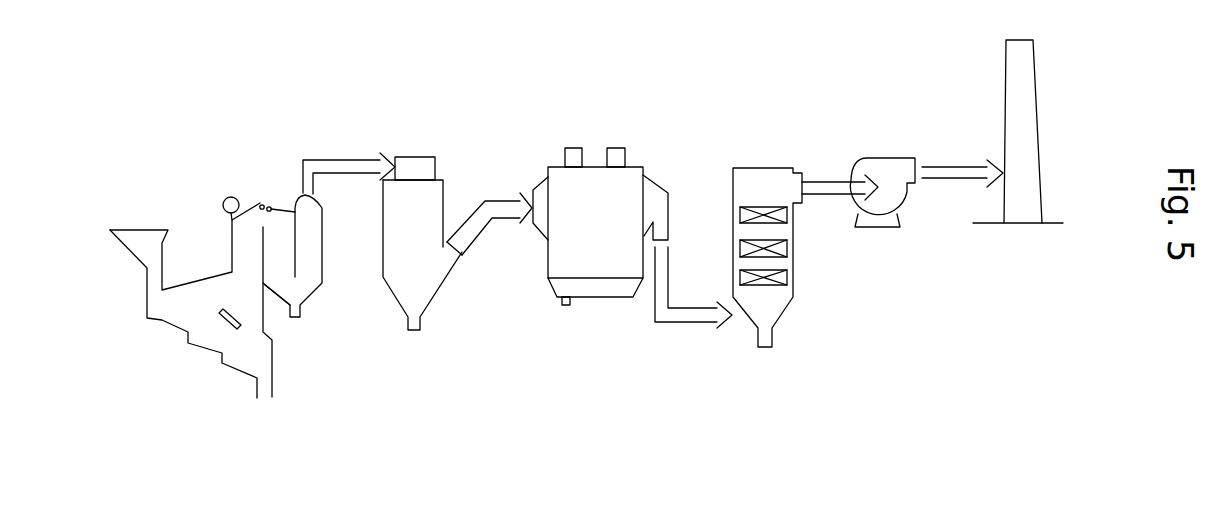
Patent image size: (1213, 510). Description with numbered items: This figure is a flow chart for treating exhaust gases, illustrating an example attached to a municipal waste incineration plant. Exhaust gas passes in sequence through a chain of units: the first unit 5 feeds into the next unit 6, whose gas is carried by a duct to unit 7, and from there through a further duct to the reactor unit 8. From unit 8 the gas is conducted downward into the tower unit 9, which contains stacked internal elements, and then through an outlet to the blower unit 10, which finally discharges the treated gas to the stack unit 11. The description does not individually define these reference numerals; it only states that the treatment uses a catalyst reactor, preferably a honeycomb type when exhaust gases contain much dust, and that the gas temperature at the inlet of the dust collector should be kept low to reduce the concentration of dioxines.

The incinerator with feed hopper 5 is at (162, 323).
The secondary combustion chamber 6 is at (288, 213).
The cyclone dust collector 7 is at (383, 263).
The catalytic reactor 8 is at (545, 253).
The heat exchanger cooling tower 9 is at (795, 297).
The blower 10 is at (853, 203).
The stack 11 is at (1027, 172).